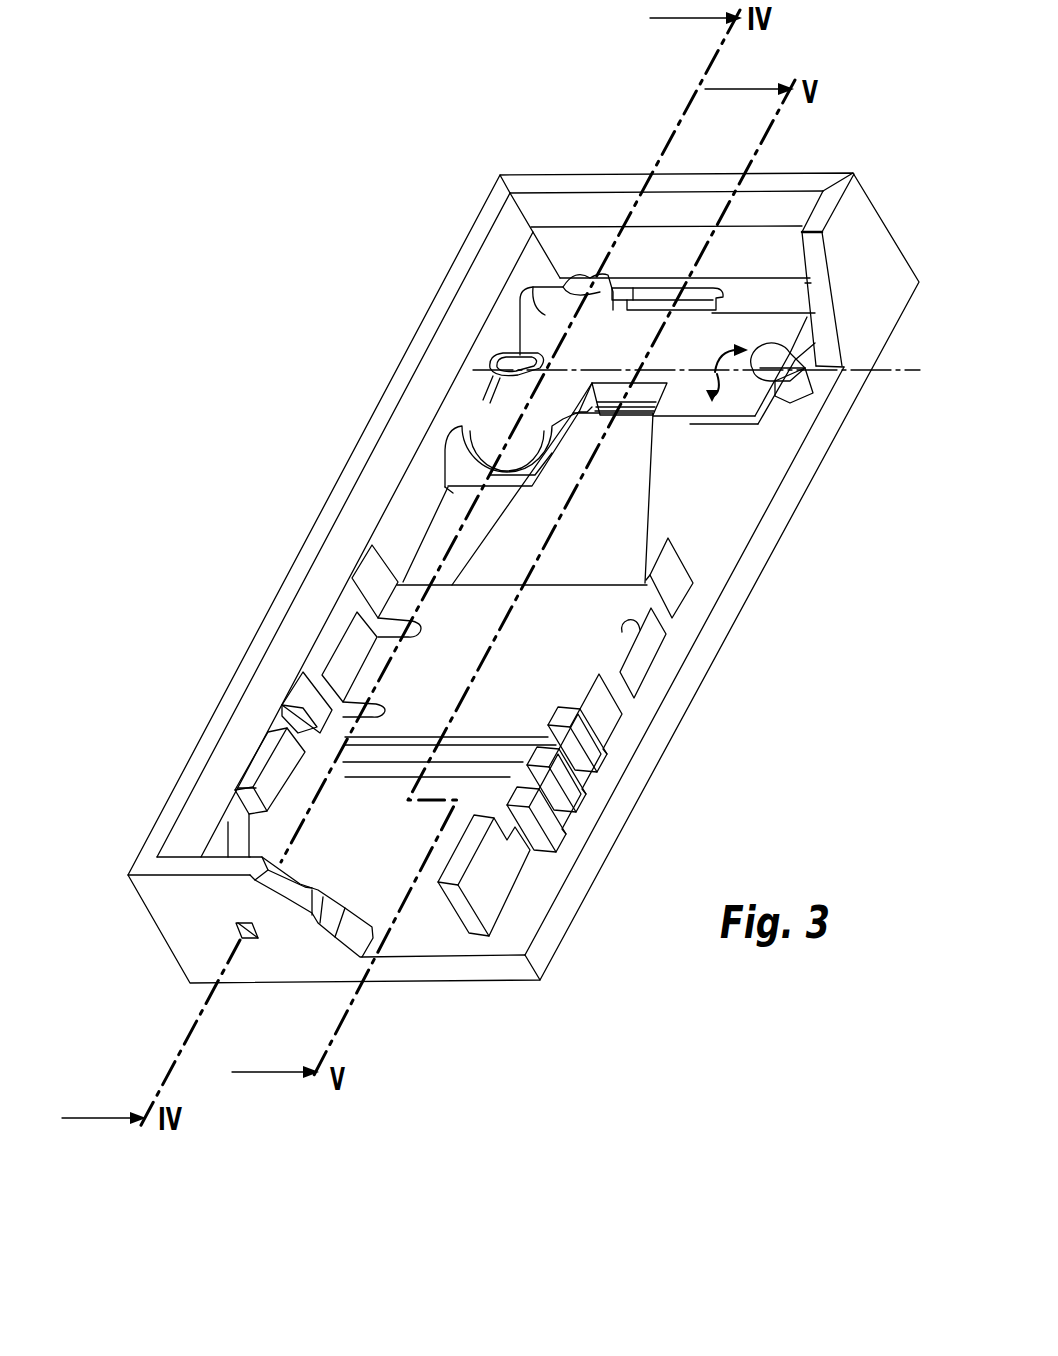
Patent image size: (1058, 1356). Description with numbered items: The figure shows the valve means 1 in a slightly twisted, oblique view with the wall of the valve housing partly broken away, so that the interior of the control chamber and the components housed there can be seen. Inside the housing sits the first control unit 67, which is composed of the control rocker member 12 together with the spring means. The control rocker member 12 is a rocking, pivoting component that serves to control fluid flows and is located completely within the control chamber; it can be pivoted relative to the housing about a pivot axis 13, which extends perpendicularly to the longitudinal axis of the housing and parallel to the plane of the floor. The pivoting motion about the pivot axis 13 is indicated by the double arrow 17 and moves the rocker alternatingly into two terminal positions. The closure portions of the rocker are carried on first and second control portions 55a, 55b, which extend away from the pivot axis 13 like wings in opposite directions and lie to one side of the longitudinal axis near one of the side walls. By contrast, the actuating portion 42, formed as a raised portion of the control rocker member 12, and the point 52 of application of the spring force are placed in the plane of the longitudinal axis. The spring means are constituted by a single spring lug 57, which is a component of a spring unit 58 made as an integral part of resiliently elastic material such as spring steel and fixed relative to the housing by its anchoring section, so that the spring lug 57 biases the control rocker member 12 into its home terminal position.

The valve means 1 is at (461, 185).
The control rocker member 12 is at (701, 356).
The pivot axis 13 is at (885, 371).
The double arrow 17 is at (713, 364).
The actuating portion 42 is at (662, 292).
The point of application of spring force 52 is at (640, 418).
The first control portion 55a is at (498, 438).
The second control portion 55b is at (579, 284).
The spring lug 57 is at (627, 500).
The spring unit 58 is at (680, 633).
The first control unit 67 is at (472, 337).